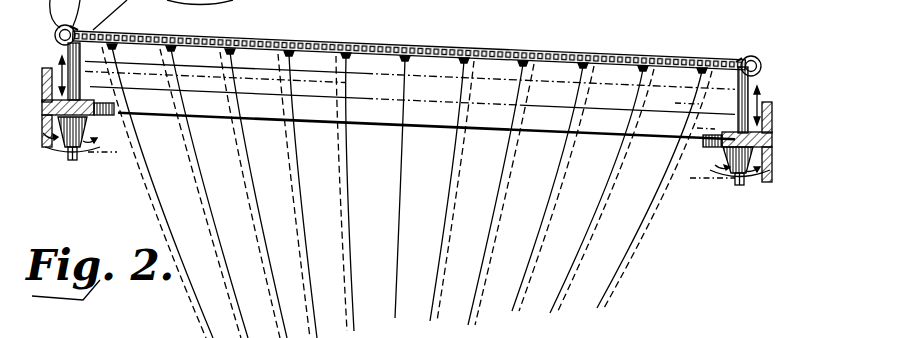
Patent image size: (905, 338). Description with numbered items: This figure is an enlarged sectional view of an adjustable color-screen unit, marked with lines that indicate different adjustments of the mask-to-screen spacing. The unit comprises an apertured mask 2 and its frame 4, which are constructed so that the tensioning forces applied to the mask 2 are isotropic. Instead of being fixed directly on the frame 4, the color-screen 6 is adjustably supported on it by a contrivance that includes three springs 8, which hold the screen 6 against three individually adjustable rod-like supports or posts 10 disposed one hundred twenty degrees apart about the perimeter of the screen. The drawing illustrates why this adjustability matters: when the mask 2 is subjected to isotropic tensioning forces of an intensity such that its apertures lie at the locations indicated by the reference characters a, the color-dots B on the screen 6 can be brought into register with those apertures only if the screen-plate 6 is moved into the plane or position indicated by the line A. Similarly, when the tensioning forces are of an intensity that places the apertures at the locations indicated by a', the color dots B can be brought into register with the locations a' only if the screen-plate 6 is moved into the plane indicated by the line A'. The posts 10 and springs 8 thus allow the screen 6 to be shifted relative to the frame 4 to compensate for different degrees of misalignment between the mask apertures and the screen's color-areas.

The apertured mask 2 is at (663, 141).
The frame 4 is at (806, 139).
The color-screen 6 is at (624, 50).
The springs 8 is at (752, 56).
The rod-like supports or posts 10 is at (750, 80).
The line A is at (367, 117).
The line A' is at (417, 131).
The color-dots B is at (233, 53).
The aperture locations a is at (399, 127).
The aperture locations a' is at (399, 135).